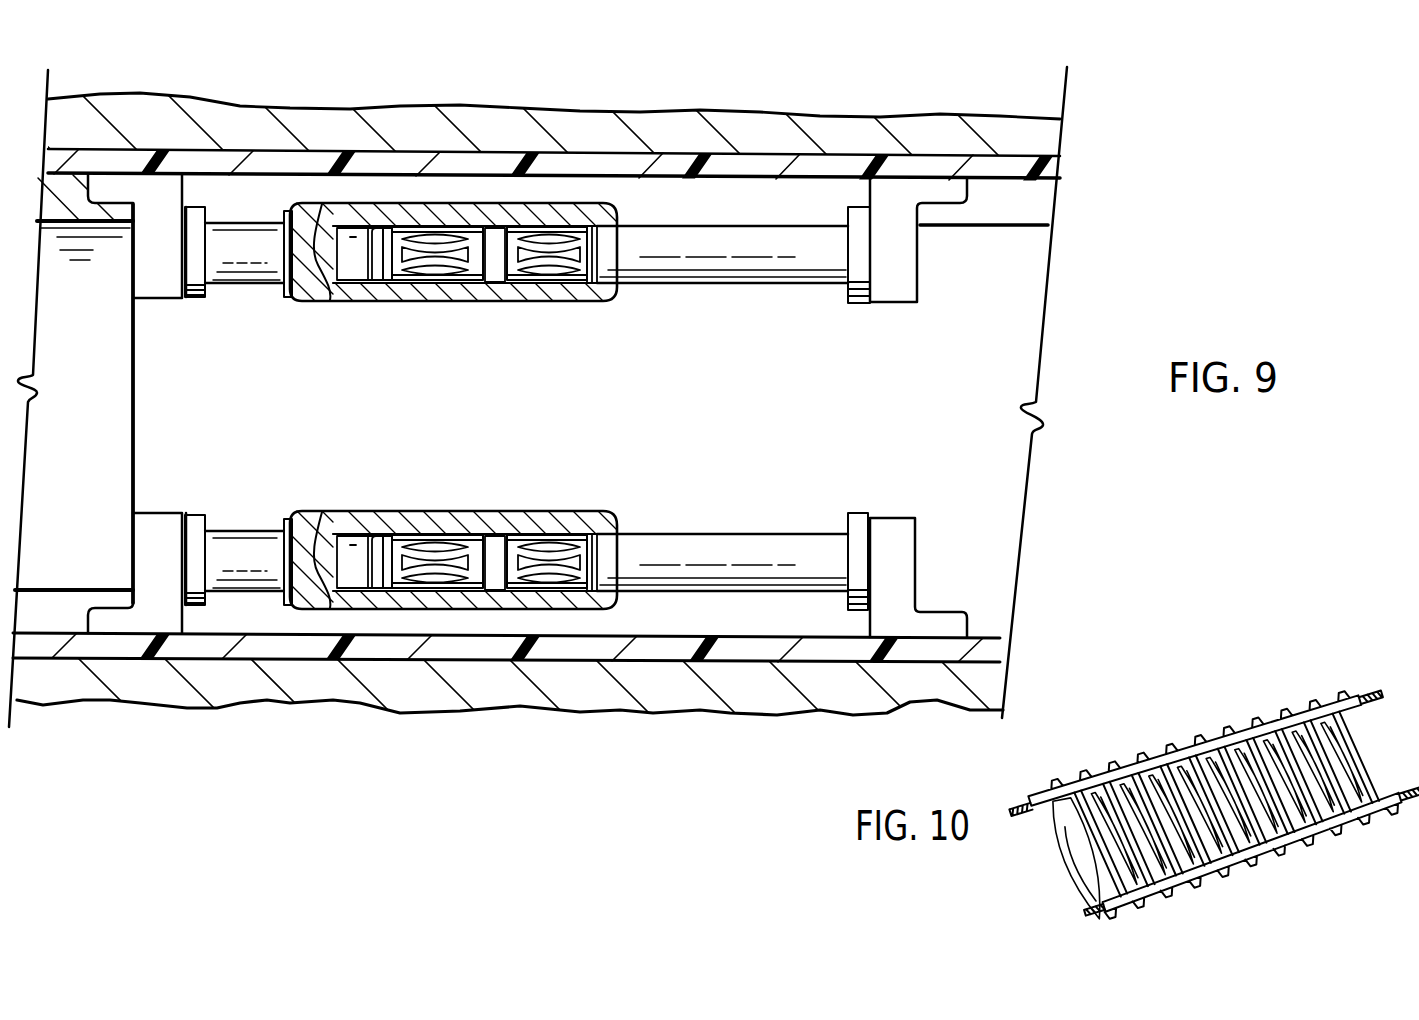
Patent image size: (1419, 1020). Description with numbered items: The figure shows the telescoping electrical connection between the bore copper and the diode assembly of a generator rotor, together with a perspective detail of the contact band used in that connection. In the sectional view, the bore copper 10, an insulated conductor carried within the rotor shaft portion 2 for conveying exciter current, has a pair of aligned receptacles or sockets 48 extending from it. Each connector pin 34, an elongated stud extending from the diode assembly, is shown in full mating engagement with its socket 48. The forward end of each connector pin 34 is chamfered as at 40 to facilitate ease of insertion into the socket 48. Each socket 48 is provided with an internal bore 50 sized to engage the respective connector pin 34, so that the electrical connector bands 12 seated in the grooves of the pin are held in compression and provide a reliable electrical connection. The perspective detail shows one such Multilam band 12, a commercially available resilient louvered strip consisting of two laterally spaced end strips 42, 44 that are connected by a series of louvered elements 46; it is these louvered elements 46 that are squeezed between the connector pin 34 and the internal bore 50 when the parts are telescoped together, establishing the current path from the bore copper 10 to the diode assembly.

In FIG. 9, the rotor shaft portion 2 is at (135, 106).
In FIG. 9, the bore copper 10 is at (140, 425).
In FIG. 9, the Multilam connector band 12 is at (477, 229).
In FIG. 10, the Multilam connector band 12 is at (1212, 769).
In FIG. 9, the connector pin 34 is at (713, 232).
In FIG. 9, the chamfer 40 is at (378, 236).
In FIG. 10, the end strip 42 is at (1252, 856).
In FIG. 10, the end strip 44 is at (1193, 747).
In FIG. 9, the louvered element 46 is at (556, 268).
In FIG. 10, the louvered element 46 is at (1213, 808).
In FIG. 9, the socket 48 is at (441, 293).
In FIG. 9, the internal bore 50 is at (362, 280).